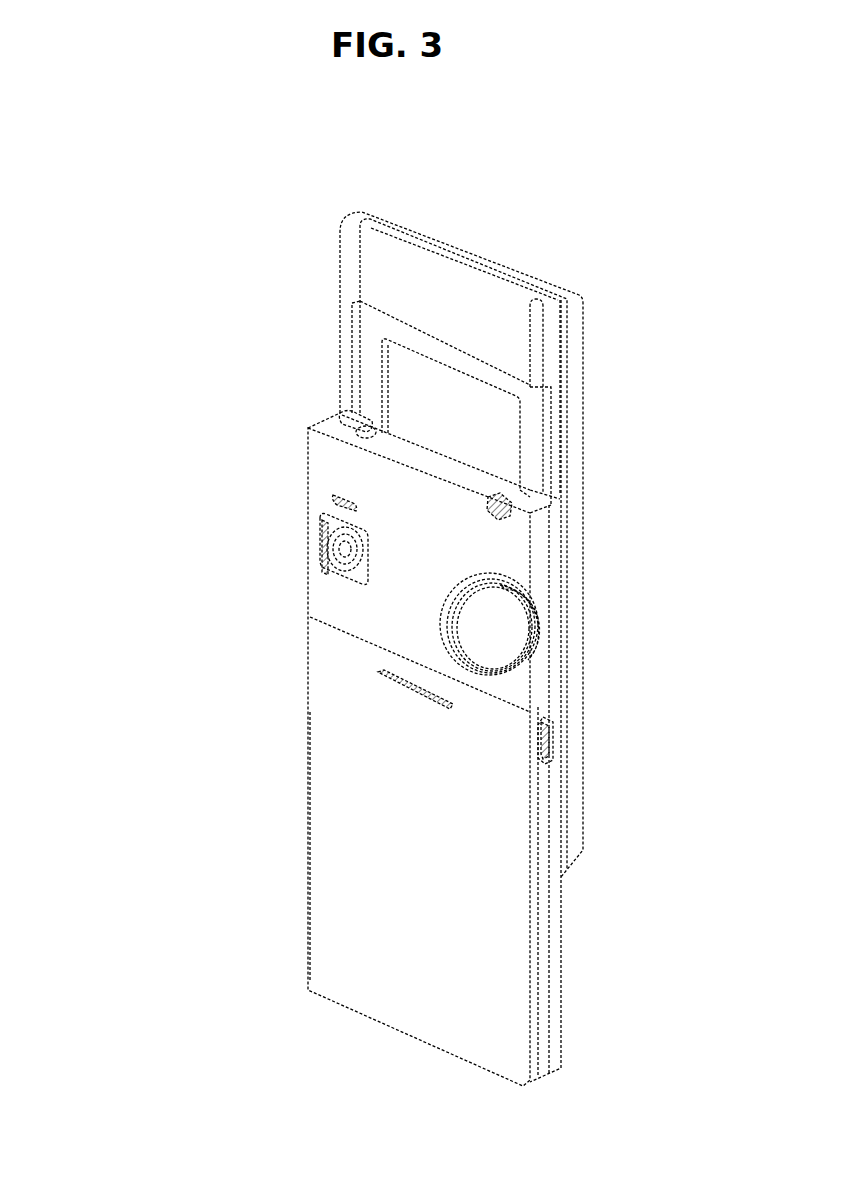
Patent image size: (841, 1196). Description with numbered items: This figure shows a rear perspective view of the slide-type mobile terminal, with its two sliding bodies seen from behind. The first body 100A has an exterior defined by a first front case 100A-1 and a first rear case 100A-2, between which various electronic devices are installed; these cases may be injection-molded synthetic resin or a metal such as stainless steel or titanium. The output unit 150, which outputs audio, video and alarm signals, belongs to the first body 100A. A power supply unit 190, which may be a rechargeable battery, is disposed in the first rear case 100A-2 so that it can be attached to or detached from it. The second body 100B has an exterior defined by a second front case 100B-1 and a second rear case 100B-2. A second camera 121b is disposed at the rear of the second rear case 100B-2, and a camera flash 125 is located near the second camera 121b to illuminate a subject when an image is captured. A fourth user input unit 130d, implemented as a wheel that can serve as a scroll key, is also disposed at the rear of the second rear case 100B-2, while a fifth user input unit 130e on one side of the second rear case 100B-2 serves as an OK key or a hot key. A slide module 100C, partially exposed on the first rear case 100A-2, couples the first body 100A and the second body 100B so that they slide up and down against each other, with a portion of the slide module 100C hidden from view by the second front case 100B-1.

The first body 100A is at (217, 252).
The first front case 100A-1 is at (407, 222).
The first rear case 100A-2 is at (371, 220).
The slide module 100C is at (412, 378).
The second body 100B is at (184, 656).
The second front case 100B-1 is at (558, 923).
The second rear case 100B-2 is at (547, 980).
The output unit 150 is at (352, 442).
The camera flash 125 is at (332, 507).
The second camera 121b is at (325, 553).
The fourth user input unit 130d is at (537, 640).
The fifth user input unit 130e is at (553, 735).
The power supply unit 190 is at (345, 822).